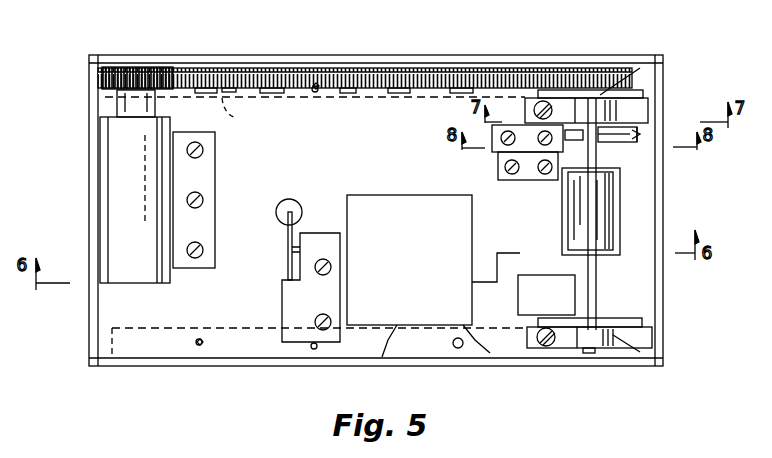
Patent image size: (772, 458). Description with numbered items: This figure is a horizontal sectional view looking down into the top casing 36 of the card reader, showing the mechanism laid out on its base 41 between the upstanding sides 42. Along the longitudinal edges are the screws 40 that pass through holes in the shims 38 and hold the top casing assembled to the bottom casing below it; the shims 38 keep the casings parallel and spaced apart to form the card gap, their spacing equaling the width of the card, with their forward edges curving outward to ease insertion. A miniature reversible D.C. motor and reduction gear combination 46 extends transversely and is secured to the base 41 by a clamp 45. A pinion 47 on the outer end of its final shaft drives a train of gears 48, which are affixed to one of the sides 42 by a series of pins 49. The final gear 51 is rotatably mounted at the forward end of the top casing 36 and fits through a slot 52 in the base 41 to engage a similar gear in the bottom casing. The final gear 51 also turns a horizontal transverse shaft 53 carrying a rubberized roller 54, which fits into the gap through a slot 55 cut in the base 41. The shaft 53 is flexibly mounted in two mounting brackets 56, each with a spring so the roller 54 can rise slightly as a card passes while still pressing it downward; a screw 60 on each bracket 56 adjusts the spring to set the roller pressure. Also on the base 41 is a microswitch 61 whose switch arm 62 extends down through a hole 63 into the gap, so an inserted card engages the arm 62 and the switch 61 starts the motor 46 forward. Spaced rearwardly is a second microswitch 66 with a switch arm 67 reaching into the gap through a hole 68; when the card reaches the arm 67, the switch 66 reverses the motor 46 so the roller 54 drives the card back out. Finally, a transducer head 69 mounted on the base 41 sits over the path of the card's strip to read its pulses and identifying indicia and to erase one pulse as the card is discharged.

The top casing 36 is at (288, 52).
The shims 38 is at (405, 380).
The screws 40 is at (195, 90).
The base 41 is at (316, 159).
The upstanding sides 42 is at (373, 62).
The clamp 45 is at (194, 218).
The motor and reduction gear combination 46 is at (118, 206).
The pinion 47 is at (142, 72).
The train of gears 48 is at (260, 72).
The pins 49 is at (395, 88).
The final gear 51 is at (582, 68).
The slot 52 is at (627, 70).
The horizontal transverse shaft 53 is at (597, 268).
The rubberized roller 54 is at (585, 220).
The slot 55 is at (615, 213).
The mounting brackets 56 is at (618, 108).
The screw 60 is at (538, 103).
The microswitch 61 is at (520, 140).
The switch arm 62 is at (610, 137).
The hole 63 is at (637, 137).
The second microswitch 66 is at (300, 308).
The switch arm 67 is at (288, 258).
The hole 68 is at (282, 203).
The transducer (head) 69 is at (534, 303).